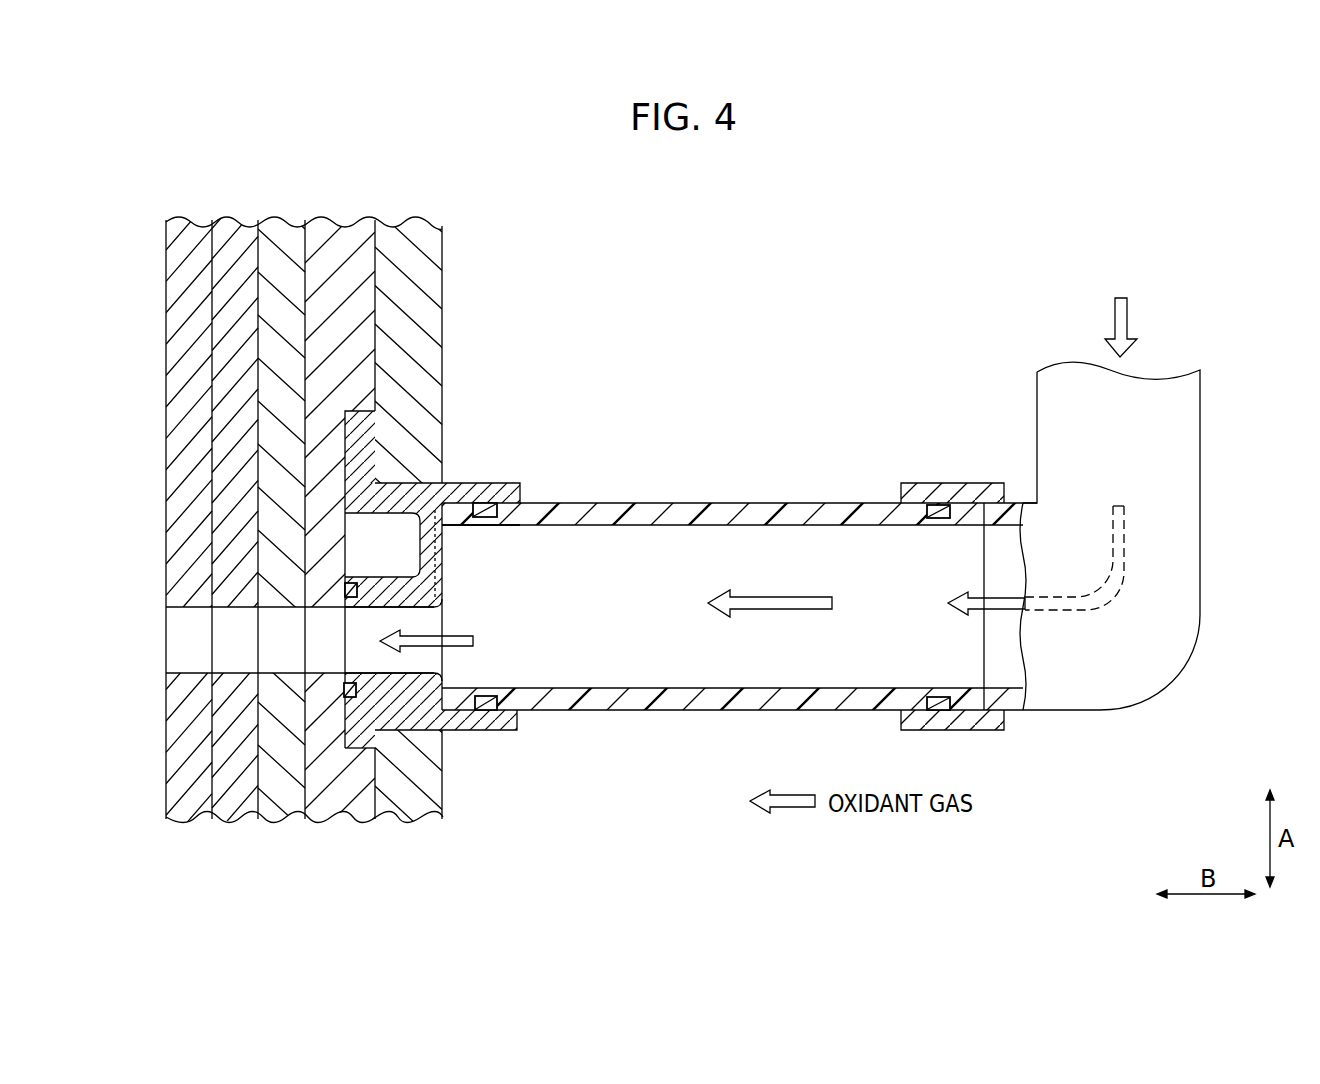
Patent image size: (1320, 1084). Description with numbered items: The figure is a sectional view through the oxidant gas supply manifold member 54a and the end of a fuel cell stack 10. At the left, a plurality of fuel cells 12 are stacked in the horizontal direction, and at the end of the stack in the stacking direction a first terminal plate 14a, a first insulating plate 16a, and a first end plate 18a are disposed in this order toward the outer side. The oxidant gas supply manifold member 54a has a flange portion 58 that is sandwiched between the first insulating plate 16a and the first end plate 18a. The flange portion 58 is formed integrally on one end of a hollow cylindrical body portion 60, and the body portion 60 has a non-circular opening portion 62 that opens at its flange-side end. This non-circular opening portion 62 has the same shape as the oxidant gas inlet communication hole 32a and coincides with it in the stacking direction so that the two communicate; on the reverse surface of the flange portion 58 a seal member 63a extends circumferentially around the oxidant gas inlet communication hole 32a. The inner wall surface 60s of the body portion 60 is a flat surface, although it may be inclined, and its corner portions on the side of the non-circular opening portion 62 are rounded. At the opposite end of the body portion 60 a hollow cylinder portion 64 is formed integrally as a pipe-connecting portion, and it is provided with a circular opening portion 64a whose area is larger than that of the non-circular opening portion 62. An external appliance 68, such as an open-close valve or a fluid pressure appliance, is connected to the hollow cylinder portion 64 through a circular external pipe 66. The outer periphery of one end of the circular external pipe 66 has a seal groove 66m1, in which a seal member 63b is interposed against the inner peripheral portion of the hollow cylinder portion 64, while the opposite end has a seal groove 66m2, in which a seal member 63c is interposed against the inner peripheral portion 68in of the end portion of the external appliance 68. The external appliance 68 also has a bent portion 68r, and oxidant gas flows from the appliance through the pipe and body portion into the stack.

The fuel cell stack 10 is at (783, 171).
The fuel cell 12 is at (193, 232).
The first terminal plate 14a is at (287, 222).
The first insulating plate 16a is at (345, 222).
The first end plate 18a is at (412, 222).
The oxidant gas inlet communication hole 32a is at (195, 632).
The oxidant gas supply manifold member 54a is at (514, 472).
The flange portion 58 is at (368, 423).
The body portion 60 is at (448, 602).
The inner wall surface 60s is at (441, 580).
The non-circular opening portion 62 is at (408, 672).
The seal member 63a is at (350, 583).
The seal member 63b is at (487, 503).
The seal member 63c is at (937, 519).
The hollow cylinder portion 64 is at (485, 487).
The circular opening portion 64a is at (472, 512).
The circular external pipe 66 is at (700, 711).
The seal groove 66m1 is at (487, 711).
The seal groove 66m2 is at (943, 711).
The external appliance 68 is at (1074, 533).
The inner peripheral portion 68in is at (918, 709).
The bent portion 68r is at (1150, 686).